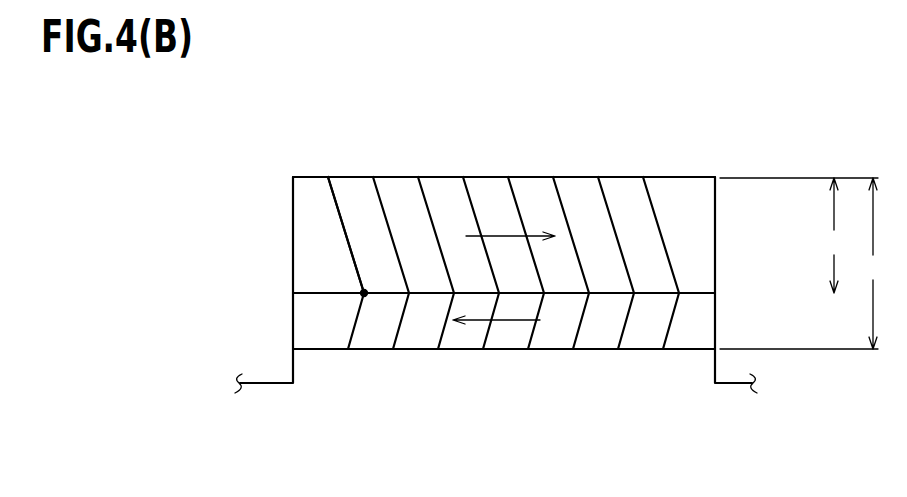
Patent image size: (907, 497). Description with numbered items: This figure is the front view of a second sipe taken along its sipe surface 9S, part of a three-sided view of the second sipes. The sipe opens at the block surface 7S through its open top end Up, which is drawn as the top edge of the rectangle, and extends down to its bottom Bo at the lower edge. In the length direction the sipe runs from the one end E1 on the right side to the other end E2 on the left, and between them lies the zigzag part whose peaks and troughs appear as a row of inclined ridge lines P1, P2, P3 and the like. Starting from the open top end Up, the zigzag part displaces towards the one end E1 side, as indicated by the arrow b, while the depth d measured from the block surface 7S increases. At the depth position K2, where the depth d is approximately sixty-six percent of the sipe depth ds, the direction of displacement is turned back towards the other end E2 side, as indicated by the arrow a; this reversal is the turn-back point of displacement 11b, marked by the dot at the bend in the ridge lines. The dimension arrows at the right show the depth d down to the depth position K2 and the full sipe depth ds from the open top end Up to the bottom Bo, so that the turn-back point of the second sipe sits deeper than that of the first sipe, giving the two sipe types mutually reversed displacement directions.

The other end E2 is at (293, 199).
The one end E1 is at (716, 200).
The open top end Up is at (627, 178).
The bottom Bo is at (596, 350).
The depth position K2 is at (838, 293).
The block surface 7S is at (343, 216).
The ridge line P1 is at (342, 213).
The ridge line P2 is at (387, 213).
The third pitch groove P3 is at (432, 213).
The sipe surface 9S is at (372, 244).
The turn-back point of displacement 11b is at (364, 293).
The arrow b is at (510, 236).
The arrow a is at (507, 322).
The depth d is at (833, 235).
The sipe depth ds is at (873, 263).